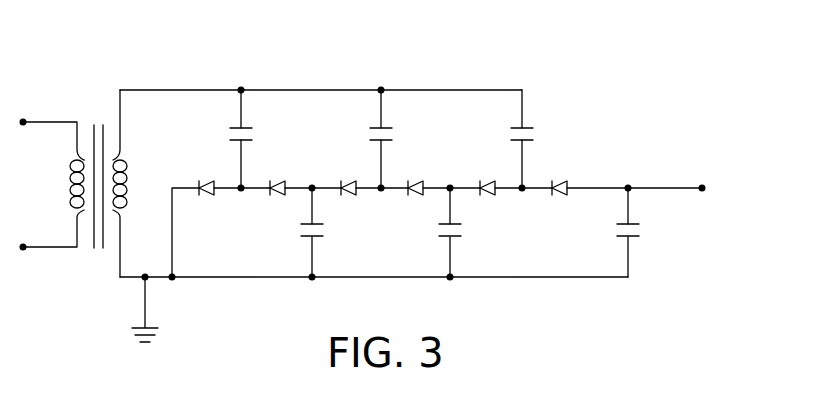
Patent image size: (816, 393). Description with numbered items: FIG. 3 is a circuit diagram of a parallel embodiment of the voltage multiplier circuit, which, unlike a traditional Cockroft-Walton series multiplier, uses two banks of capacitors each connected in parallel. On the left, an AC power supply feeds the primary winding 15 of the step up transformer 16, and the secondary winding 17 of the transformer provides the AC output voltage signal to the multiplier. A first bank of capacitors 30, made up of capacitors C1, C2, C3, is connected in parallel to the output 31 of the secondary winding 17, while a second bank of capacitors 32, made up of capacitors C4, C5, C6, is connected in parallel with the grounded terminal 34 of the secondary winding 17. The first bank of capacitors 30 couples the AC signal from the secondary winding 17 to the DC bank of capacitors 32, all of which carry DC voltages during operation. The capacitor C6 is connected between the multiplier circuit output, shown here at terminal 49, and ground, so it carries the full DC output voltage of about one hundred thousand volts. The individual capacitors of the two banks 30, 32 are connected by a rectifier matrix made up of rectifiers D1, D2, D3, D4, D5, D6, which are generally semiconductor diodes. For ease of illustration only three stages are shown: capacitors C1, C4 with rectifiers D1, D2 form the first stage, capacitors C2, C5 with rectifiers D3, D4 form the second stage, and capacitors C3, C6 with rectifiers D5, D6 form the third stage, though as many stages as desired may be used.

The primary winding 15 is at (72, 203).
The step up transformer 16 is at (92, 149).
The secondary winding 17 is at (128, 182).
The first bank of capacitors 30 is at (566, 124).
The output of the secondary winding 31 is at (147, 90).
The second bank of capacitors 32 is at (675, 248).
The grounded terminal 34 is at (125, 280).
The output terminal 49 is at (702, 188).
The capacitor C1 is at (224, 139).
The capacitor C2 is at (364, 139).
The capacitor C3 is at (553, 122).
The capacitor C4 is at (294, 232).
The capacitor C5 is at (433, 232).
The capacitor C6 is at (609, 232).
The rectifier D1 is at (212, 176).
The rectifier D2 is at (280, 176).
The rectifier D3 is at (353, 176).
The rectifier D4 is at (418, 176).
The rectifier D5 is at (490, 176).
The rectifier D6 is at (562, 176).